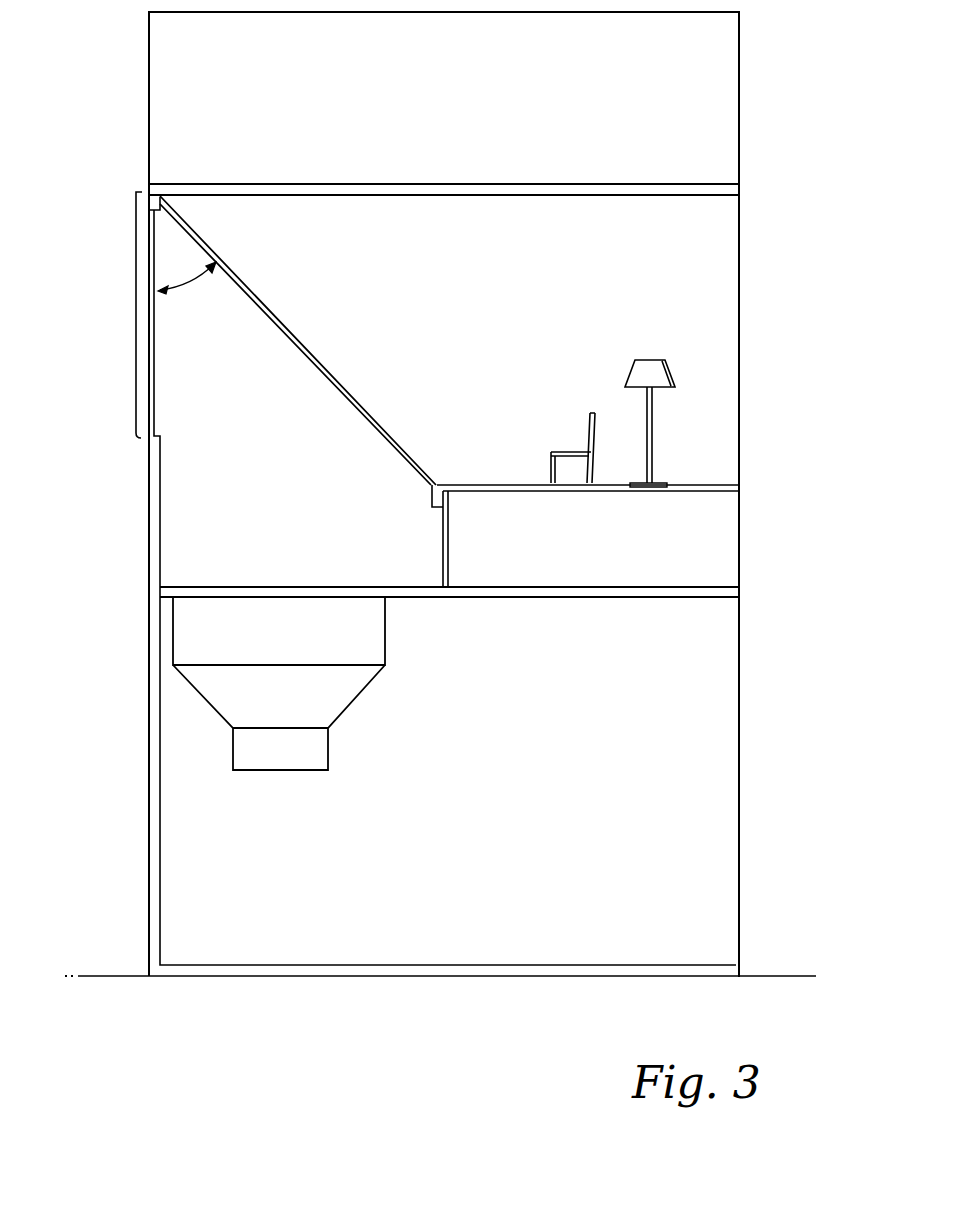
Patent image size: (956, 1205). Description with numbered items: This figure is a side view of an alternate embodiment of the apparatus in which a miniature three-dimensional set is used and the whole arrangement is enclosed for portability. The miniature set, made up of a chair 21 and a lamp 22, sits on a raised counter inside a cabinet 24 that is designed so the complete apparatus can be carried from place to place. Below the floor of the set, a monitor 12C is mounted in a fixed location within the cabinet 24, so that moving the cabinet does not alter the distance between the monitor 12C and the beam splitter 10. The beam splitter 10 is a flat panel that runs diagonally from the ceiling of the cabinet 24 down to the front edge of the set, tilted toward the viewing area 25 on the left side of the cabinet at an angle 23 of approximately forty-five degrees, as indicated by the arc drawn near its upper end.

The beam splitter 10 is at (322, 358).
The monitor 12C is at (385, 648).
The chair 21 is at (593, 415).
The lamp 22 is at (657, 360).
The angle 23 is at (193, 283).
The cabinet 24 is at (739, 124).
The viewing area 25 is at (136, 315).